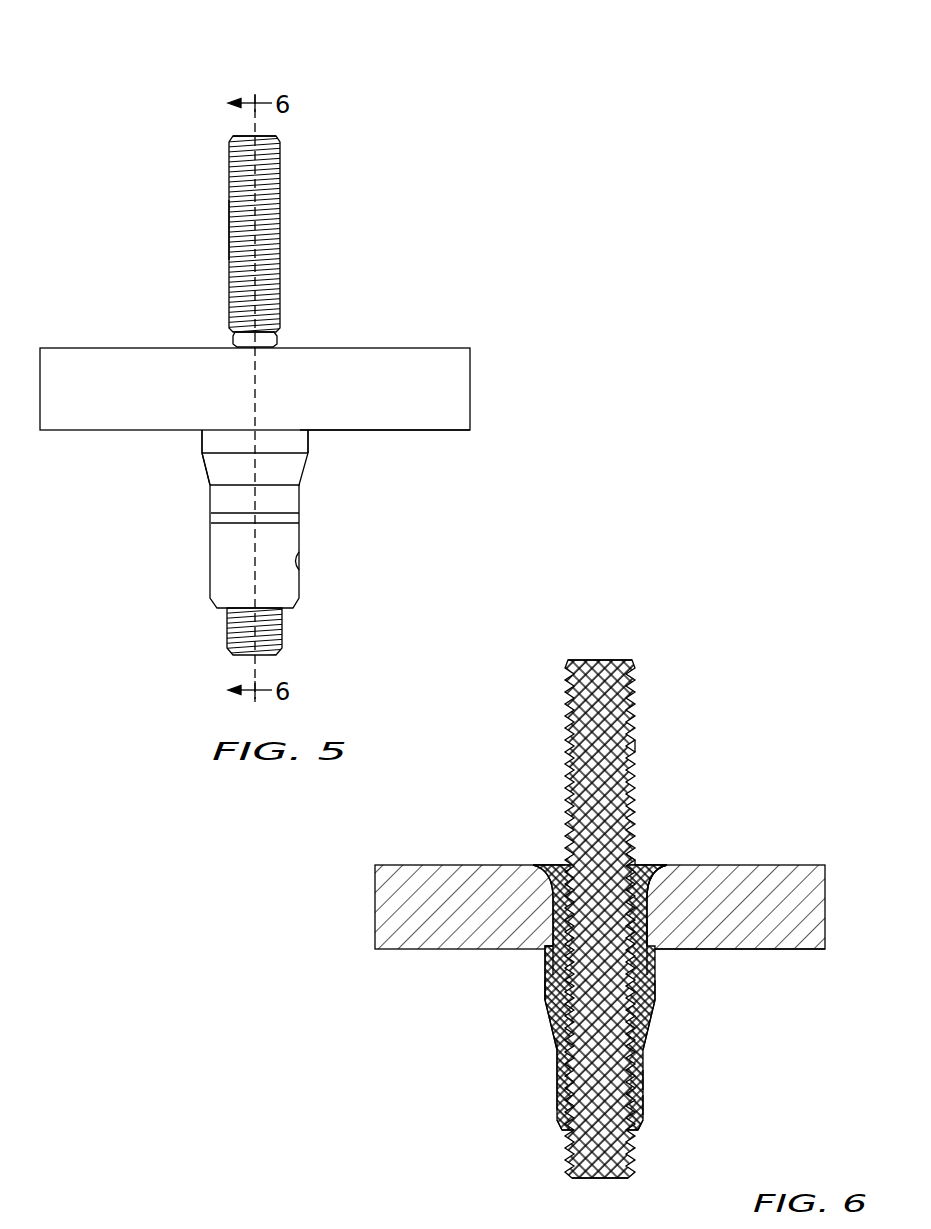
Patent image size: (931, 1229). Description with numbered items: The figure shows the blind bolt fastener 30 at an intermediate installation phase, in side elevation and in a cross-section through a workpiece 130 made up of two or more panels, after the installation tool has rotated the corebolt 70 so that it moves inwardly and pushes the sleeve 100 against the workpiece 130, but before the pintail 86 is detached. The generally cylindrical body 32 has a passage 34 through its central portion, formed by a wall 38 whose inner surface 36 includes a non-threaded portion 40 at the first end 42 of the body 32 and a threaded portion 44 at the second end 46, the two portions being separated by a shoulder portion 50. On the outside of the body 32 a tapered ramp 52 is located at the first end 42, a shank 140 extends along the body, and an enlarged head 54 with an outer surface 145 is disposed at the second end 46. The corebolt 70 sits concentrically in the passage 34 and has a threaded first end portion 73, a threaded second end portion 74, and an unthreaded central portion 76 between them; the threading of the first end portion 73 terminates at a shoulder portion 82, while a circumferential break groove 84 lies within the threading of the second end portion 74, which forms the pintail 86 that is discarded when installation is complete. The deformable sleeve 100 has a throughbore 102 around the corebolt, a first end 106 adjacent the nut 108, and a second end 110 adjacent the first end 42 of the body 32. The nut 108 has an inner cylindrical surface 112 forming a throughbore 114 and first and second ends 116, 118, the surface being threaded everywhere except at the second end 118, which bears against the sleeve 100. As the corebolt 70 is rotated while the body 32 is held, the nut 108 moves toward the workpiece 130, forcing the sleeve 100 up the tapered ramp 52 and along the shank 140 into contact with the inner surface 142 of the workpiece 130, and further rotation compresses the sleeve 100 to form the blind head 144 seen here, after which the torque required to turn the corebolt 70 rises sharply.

In FIG. 5, the fastener or blind bolt 30 is at (383, 70).
In FIG. 6, the fastener or blind bolt 30 is at (758, 649).
In FIG. 5, the corebolt 70 is at (280, 185).
In FIG. 6, the corebolt 70 is at (625, 718).
In FIG. 5, the second end portion 74 is at (270, 148).
In FIG. 6, the second end portion 74 is at (636, 674).
In FIG. 5, the pintail 86 is at (270, 243).
In FIG. 6, the pintail 86 is at (636, 768).
In FIG. 5, the break groove 84 is at (277, 342).
In FIG. 6, the break groove 84 is at (628, 862).
In FIG. 5, the workpiece 130 is at (422, 347).
In FIG. 6, the workpiece 130 is at (432, 865).
In FIG. 5, the inner surface 142 is at (410, 432).
In FIG. 6, the inner surface 142 is at (800, 950).
In FIG. 5, the sleeve 100 is at (305, 487).
In FIG. 6, the sleeve 100 is at (648, 1050).
In FIG. 5, the second end 110 is at (200, 443).
In FIG. 6, the second end 110 is at (548, 953).
In FIG. 5, the blind head 144 is at (312, 443).
In FIG. 6, the blind head 144 is at (548, 962).
In FIG. 5, the nut 108 is at (298, 562).
In FIG. 6, the nut 108 is at (650, 1128).
In FIG. 5, the first end portion 73 is at (283, 650).
In FIG. 6, the first end portion 73 is at (625, 1178).
In FIG. 6, the outer surface 145 is at (560, 862).
In FIG. 6, the shoulder portion 50 is at (477, 865).
In FIG. 6, the enlarged head 54 is at (530, 865).
In FIG. 6, the threaded portion 44 is at (648, 867).
In FIG. 6, the second end 46 is at (660, 905).
In FIG. 6, the shoulder portion 82 is at (660, 945).
In FIG. 6, the non-threaded portion 40 is at (560, 972).
In FIG. 6, the shank 140 is at (555, 992).
In FIG. 6, the passage 34 is at (556, 1012).
In FIG. 6, the body 32 is at (640, 980).
In FIG. 6, the wall 38 is at (640, 1000).
In FIG. 6, the tapered ramp 52 is at (660, 1025).
In FIG. 6, the inner surface 36 is at (640, 1040).
In FIG. 6, the throughbore 102 is at (560, 1040).
In FIG. 6, the first end 42 is at (562, 1055).
In FIG. 6, the central portion 76 is at (567, 1088).
In FIG. 6, the throughbore 114 is at (568, 1123).
In FIG. 6, the inner cylindrical surface 112 is at (572, 1148).
In FIG. 6, the first end 106 is at (650, 1080).
In FIG. 6, the second end 118 is at (648, 1105).
In FIG. 6, the first end 116 is at (640, 1150).